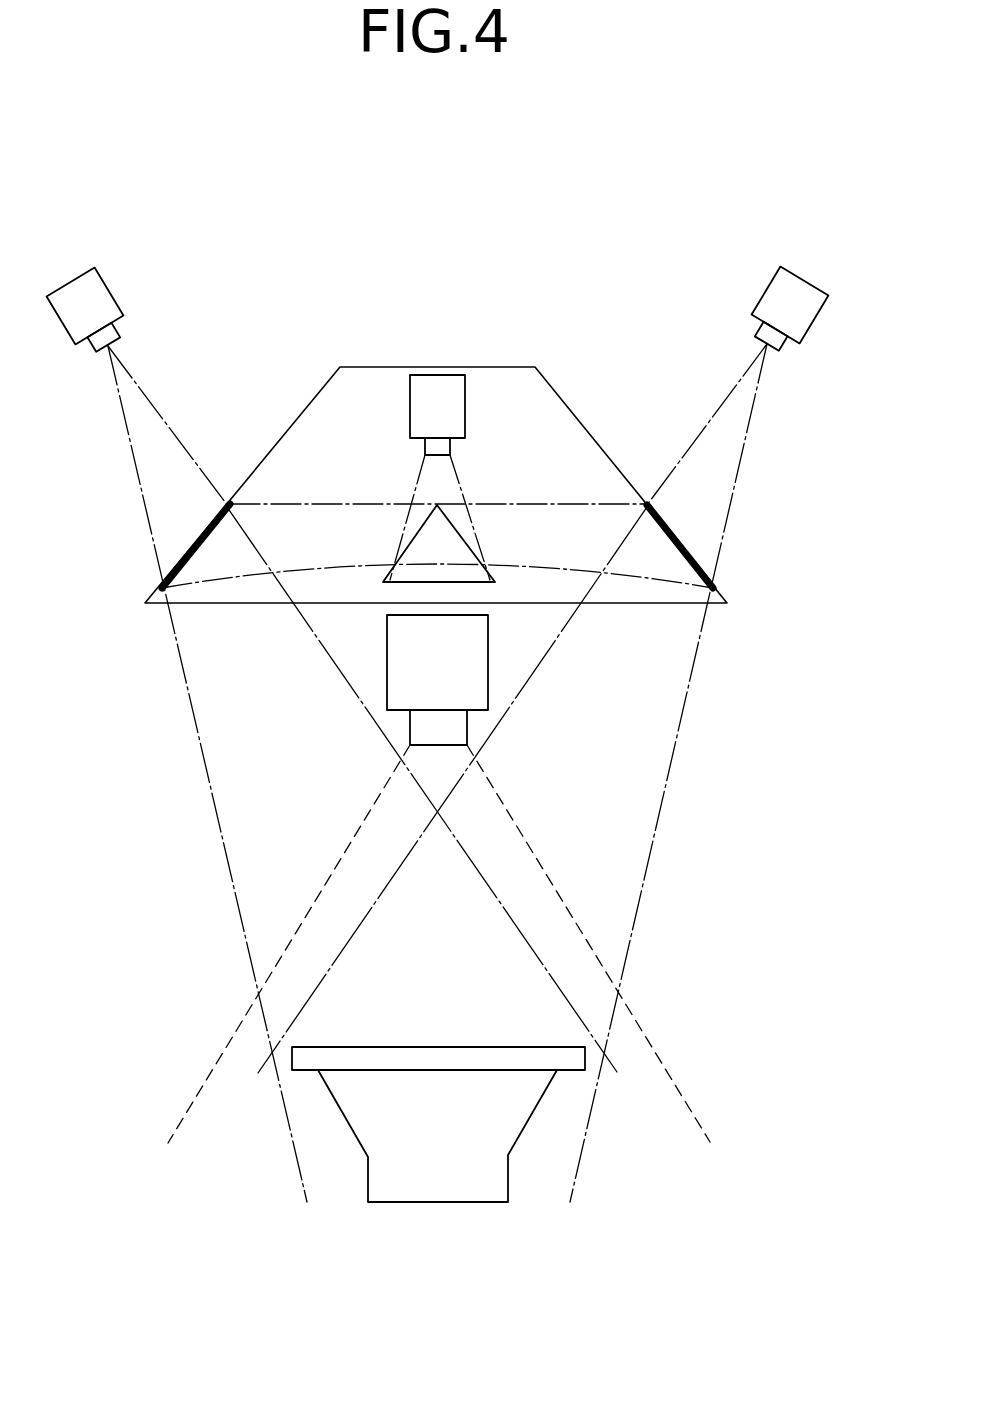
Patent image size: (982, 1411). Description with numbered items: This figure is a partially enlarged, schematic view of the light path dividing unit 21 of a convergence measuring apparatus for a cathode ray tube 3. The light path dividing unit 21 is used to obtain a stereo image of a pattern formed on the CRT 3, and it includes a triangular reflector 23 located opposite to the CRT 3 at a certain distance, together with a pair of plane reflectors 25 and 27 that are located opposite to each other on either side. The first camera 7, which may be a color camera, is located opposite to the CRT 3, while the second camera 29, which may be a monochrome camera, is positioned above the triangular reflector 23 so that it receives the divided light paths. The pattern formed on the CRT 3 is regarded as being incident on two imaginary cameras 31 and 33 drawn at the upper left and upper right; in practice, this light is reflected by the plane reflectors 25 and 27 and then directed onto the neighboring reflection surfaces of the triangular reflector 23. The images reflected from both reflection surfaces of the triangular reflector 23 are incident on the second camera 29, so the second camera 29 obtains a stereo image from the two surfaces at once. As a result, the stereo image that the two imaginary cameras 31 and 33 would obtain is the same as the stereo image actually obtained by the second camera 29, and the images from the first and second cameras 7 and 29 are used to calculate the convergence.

The cathode ray tube 3 is at (520, 1123).
The first camera 7 is at (480, 683).
The light path dividing unit 21 is at (537, 300).
The triangular reflector 23 is at (450, 520).
The plane reflector 25 is at (683, 543).
The plane reflector 27 is at (193, 545).
The second camera 29 is at (427, 387).
The imaginary camera 31 is at (98, 295).
The imaginary camera 33 is at (780, 292).